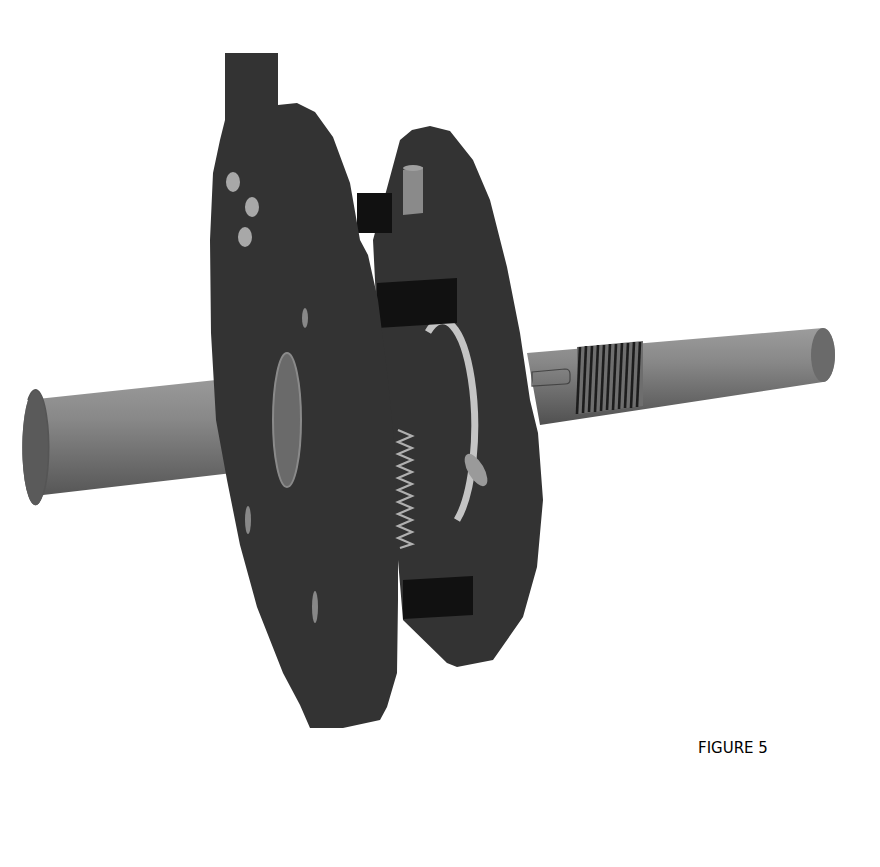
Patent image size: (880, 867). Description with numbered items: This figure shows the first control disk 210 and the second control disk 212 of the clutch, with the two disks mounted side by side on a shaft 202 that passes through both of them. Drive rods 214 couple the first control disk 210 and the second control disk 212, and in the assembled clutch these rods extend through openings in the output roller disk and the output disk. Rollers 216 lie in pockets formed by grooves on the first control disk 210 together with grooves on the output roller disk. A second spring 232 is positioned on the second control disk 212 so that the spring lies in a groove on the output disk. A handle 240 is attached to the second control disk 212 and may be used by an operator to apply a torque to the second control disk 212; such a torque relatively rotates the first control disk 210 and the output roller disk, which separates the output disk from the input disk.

The shaft 202 is at (658, 346).
The first control disk 210 is at (487, 186).
The second control disk 212 is at (216, 170).
The drive rods 214 is at (457, 288).
The rollers 216 is at (418, 167).
The second spring 232 is at (474, 559).
The handle 240 is at (232, 105).